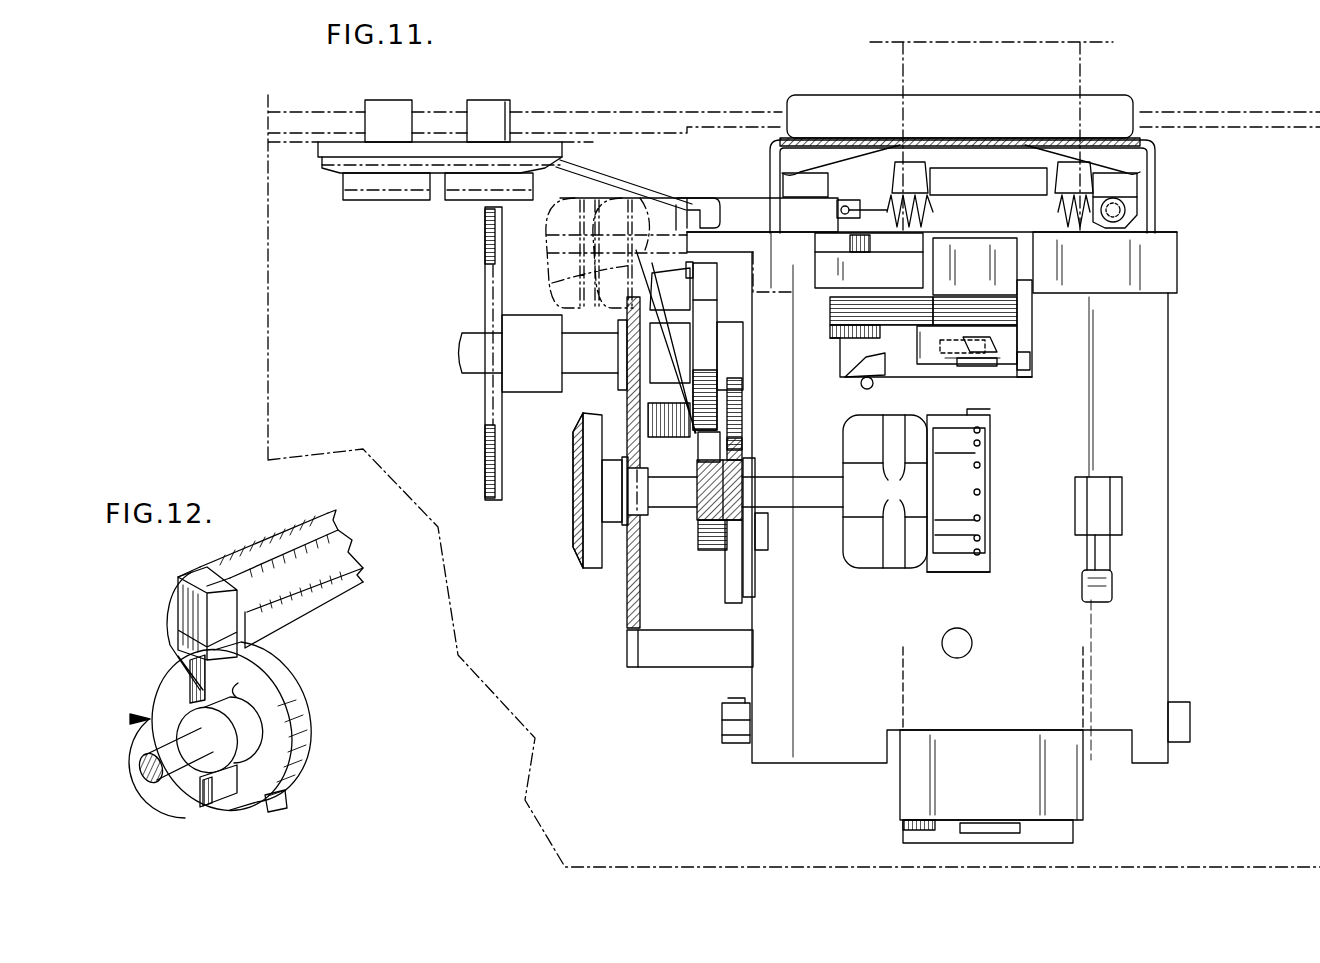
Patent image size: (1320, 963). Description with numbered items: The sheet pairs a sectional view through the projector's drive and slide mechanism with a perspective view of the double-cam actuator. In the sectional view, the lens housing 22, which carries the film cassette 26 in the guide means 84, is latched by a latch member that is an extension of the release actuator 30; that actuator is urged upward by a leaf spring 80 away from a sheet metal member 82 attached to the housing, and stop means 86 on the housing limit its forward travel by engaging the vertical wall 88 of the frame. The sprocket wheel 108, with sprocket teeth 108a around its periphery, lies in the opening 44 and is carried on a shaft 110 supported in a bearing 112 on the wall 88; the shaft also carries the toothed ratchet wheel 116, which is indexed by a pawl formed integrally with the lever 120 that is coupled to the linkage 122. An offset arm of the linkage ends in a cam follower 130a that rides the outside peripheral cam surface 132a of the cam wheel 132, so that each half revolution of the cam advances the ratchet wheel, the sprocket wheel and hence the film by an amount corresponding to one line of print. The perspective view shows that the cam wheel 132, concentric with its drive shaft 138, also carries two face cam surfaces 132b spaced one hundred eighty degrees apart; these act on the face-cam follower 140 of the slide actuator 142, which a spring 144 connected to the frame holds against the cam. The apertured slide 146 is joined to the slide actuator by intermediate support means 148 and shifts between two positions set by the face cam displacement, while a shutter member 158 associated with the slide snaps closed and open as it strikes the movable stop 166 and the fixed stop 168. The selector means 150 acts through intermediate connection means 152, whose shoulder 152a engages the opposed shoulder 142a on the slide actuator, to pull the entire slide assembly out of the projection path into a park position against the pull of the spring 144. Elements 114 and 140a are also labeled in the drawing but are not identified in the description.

In FIG. 11, the lens housing 22 is at (598, 111).
In FIG. 11, the film cassette 26 is at (1080, 70).
In FIG. 11, the release button 30 is at (1133, 98).
In FIG. 11, the opening 44 is at (950, 572).
In FIG. 11, the leaf spring 80 is at (845, 162).
In FIG. 11, the sheet metal member 82 is at (790, 185).
In FIG. 11, the film cassette guide 84 is at (912, 163).
In FIG. 11, the stop means 86 is at (1094, 604).
In FIG. 11, the vertical wall 88 is at (843, 670).
In FIG. 11, the sprocket wheel 108 is at (1043, 508).
In FIG. 11, the sprocket teeth 108a is at (980, 443).
In FIG. 11, the shaft 110 is at (781, 484).
In FIG. 11, the bearing 112 is at (846, 506).
In FIG. 11, the coupling 114 is at (850, 512).
In FIG. 11, the toothed ratchet wheel 116 is at (743, 408).
In FIG. 11, the lever 120 is at (750, 594).
In FIG. 11, the linkage 122 is at (730, 580).
In FIG. 11, the cam follower 130a is at (707, 452).
In FIG. 11, the cam wheel 132 is at (718, 300).
In FIG. 12, the cam wheel 132 is at (300, 778).
In FIG. 11, the outside peripheral cam surface 132a is at (714, 352).
In FIG. 12, the outside peripheral cam surface 132a is at (310, 737).
In FIG. 11, the face cam surfaces 132b is at (655, 327).
In FIG. 12, the face cam surfaces 132b is at (238, 672).
In FIG. 11, the drive shaft 138 is at (590, 378).
In FIG. 12, the drive shaft 138 is at (148, 775).
In FIG. 12, the face-cam follower 140 is at (187, 680).
In FIG. 11, the arm 140a is at (596, 253).
In FIG. 11, the slide actuator 142 is at (740, 197).
In FIG. 12, the slide actuator 142 is at (385, 556).
In FIG. 11, the opposed shoulder 142a is at (700, 192).
In FIG. 12, the opposed shoulder 142a is at (236, 578).
In FIG. 11, the spring 144 is at (887, 205).
In FIG. 11, the apertured slide 146 is at (1017, 345).
In FIG. 11, the intermediate support means 148 is at (1003, 312).
In FIG. 11, the selector means 150 is at (364, 100).
In FIG. 11, the intermediate connection means 152 is at (632, 186).
In FIG. 11, the shoulder 152a is at (721, 219).
In FIG. 11, the shutter member 158 is at (928, 352).
In FIG. 11, the movable stop 166 is at (877, 370).
In FIG. 11, the fixed stop 168 is at (1030, 360).